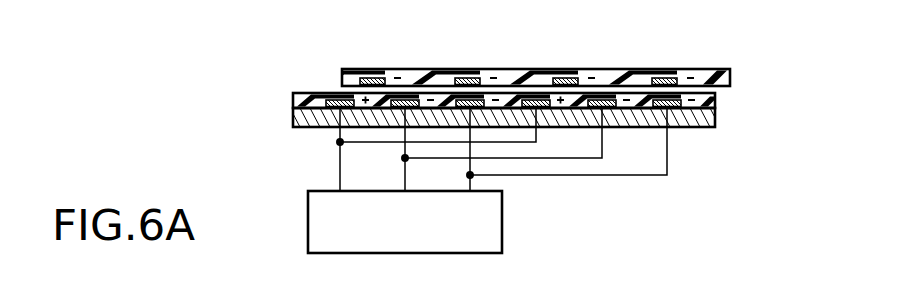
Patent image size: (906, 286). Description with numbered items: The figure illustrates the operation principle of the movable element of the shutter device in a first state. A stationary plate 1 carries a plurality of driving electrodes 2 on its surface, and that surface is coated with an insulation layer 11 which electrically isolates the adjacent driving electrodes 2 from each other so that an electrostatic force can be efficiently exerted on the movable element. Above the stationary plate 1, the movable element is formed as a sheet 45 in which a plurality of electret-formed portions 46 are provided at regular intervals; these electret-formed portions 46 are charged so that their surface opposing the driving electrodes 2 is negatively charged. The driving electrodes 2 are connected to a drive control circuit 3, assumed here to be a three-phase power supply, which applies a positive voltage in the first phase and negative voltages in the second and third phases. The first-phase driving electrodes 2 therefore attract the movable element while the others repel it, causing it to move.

The stationary plate 1 is at (715, 122).
The driving electrodes 2 is at (338, 97).
The drive control circuit 3 is at (502, 218).
The insulation layer 11 is at (715, 100).
The sheet 45 is at (529, 69).
The electret-formed portions 46 is at (666, 69).